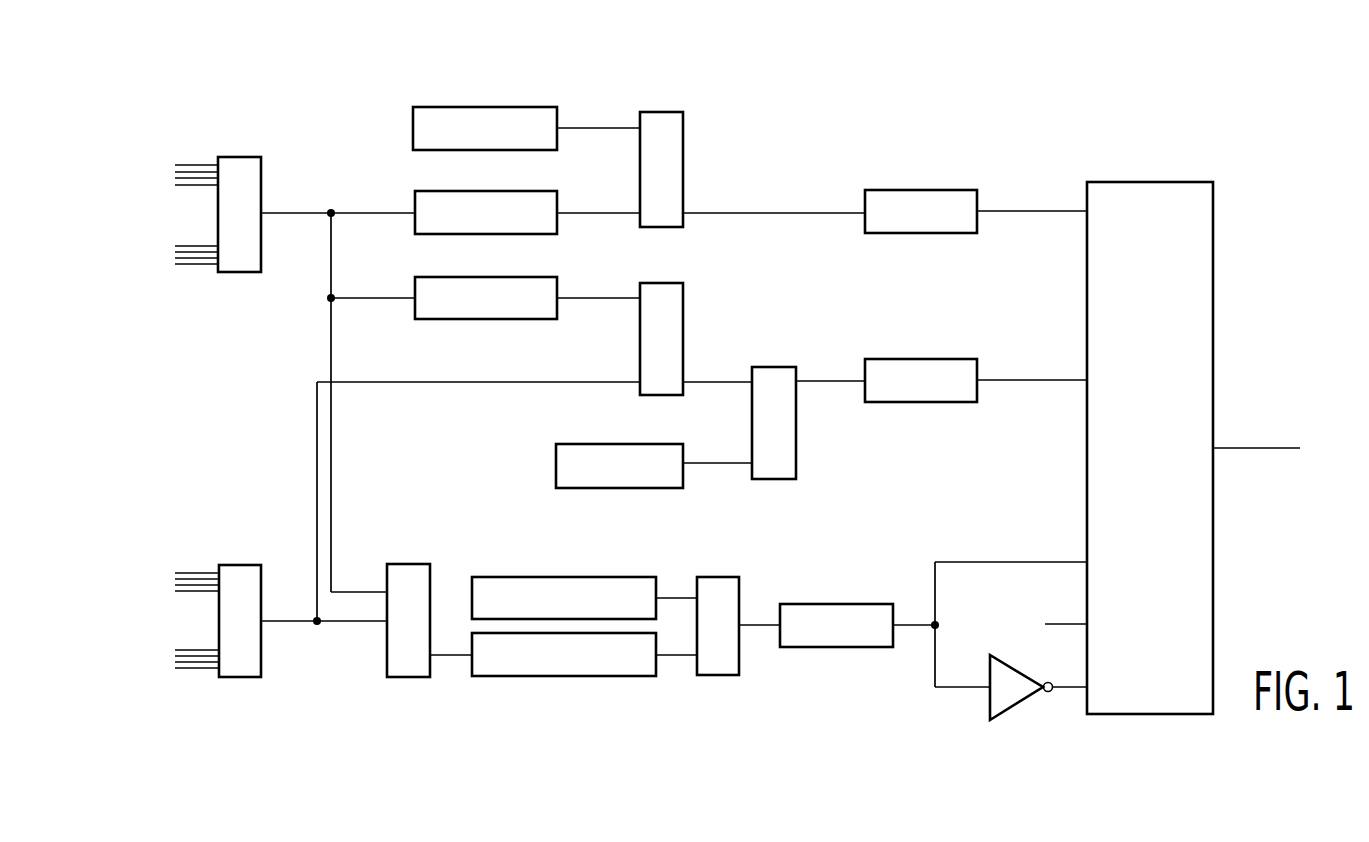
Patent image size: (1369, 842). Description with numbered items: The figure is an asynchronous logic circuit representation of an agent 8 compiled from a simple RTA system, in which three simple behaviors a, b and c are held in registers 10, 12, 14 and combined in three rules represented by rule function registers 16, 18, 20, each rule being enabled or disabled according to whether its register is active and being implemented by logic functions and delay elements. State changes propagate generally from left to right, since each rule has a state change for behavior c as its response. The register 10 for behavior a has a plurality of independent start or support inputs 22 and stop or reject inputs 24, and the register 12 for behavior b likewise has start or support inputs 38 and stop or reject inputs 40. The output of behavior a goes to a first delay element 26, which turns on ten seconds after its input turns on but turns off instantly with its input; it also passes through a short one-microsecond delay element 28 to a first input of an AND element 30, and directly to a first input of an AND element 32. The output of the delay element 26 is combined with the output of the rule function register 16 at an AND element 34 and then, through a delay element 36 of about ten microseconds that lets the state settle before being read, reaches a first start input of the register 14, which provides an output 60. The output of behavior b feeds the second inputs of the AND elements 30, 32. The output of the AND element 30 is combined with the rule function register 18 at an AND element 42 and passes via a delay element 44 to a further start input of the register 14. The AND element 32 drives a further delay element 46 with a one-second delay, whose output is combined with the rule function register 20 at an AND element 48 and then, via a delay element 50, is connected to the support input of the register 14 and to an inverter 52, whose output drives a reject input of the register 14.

The agent 8 is at (830, 122).
The register 10 is at (247, 272).
The register 12 is at (247, 677).
The register 14 is at (1193, 258).
The rule function register 16 is at (503, 107).
The rule function register 18 is at (558, 479).
The rule function register 20 is at (614, 578).
The start or support inputs 22 is at (153, 162).
The stop or reject inputs 24 is at (153, 268).
The first delay element 26 is at (550, 198).
The delay element 28 is at (515, 320).
The AND element 30 is at (672, 298).
The AND element 32 is at (413, 677).
The AND element 34 is at (677, 132).
The delay element 36 is at (960, 233).
The start or support inputs 38 is at (153, 568).
The stop or reject inputs 40 is at (153, 674).
The AND element 42 is at (790, 469).
The delay element 44 is at (960, 402).
The delay element 46 is at (620, 676).
The AND element 48 is at (720, 675).
The delay element 50 is at (875, 648).
The inverter 52 is at (1010, 697).
The output 60 is at (1252, 448).